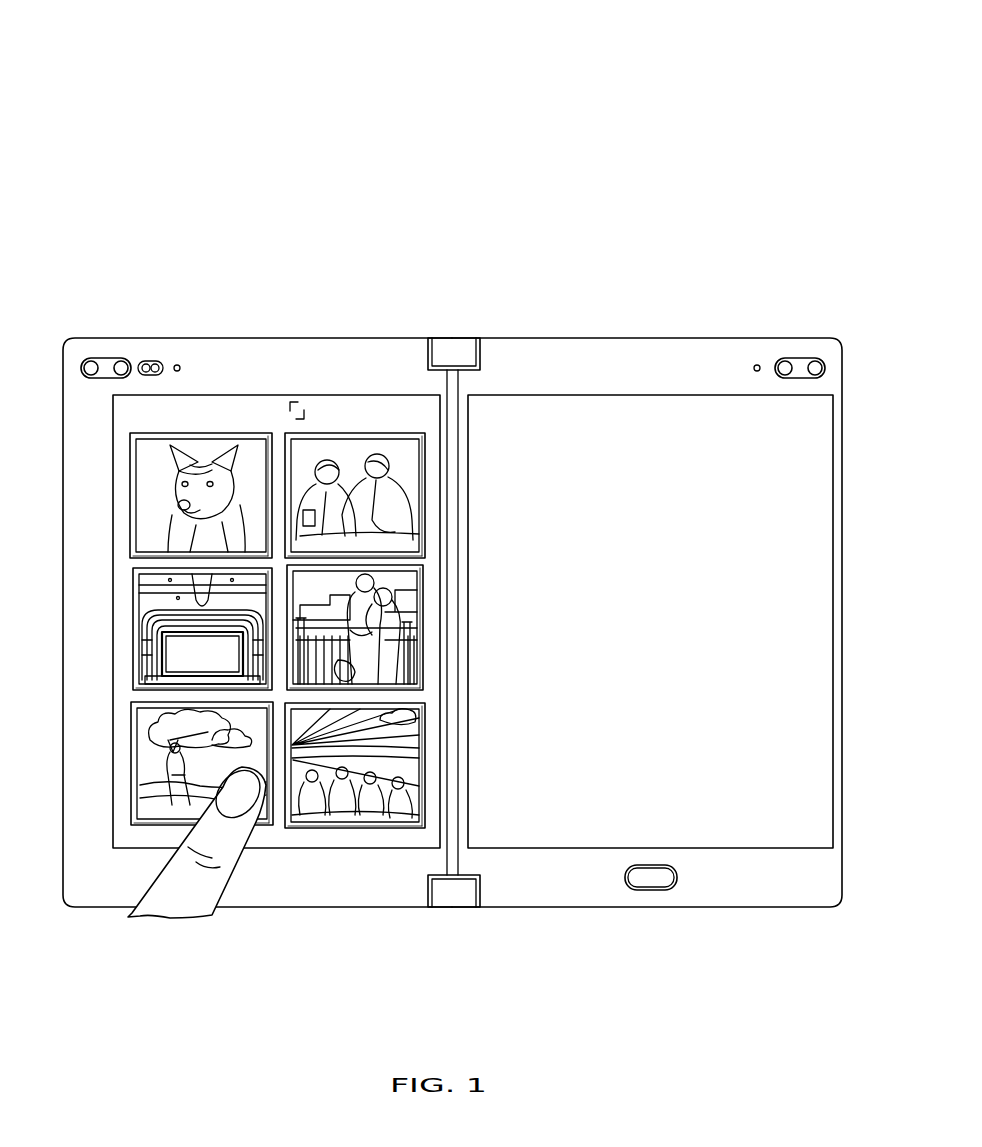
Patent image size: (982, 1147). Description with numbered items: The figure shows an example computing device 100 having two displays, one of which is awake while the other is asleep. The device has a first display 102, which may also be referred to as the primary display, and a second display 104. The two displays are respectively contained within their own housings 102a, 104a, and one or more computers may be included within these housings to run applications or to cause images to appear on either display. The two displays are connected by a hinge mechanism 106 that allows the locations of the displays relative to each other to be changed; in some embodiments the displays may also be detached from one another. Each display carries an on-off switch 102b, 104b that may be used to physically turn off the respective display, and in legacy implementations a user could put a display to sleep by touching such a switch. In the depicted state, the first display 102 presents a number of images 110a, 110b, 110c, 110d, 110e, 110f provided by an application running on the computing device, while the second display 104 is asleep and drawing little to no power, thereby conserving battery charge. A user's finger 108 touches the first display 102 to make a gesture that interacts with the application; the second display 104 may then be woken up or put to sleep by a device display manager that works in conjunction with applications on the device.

The computing device 100 is at (714, 90).
The first display 102 is at (362, 397).
The housing 102a is at (242, 348).
The on-off switch 102b is at (104, 360).
The second display 104 is at (667, 393).
The housing 104a is at (592, 340).
The on-off switch 104b is at (798, 365).
The hinge mechanism 106 is at (456, 354).
The user's finger 108 is at (242, 840).
The image 110a is at (232, 433).
The image 110b is at (320, 433).
The image 110c is at (133, 585).
The image 110d is at (423, 606).
The image 110e is at (131, 748).
The image 110f is at (425, 777).